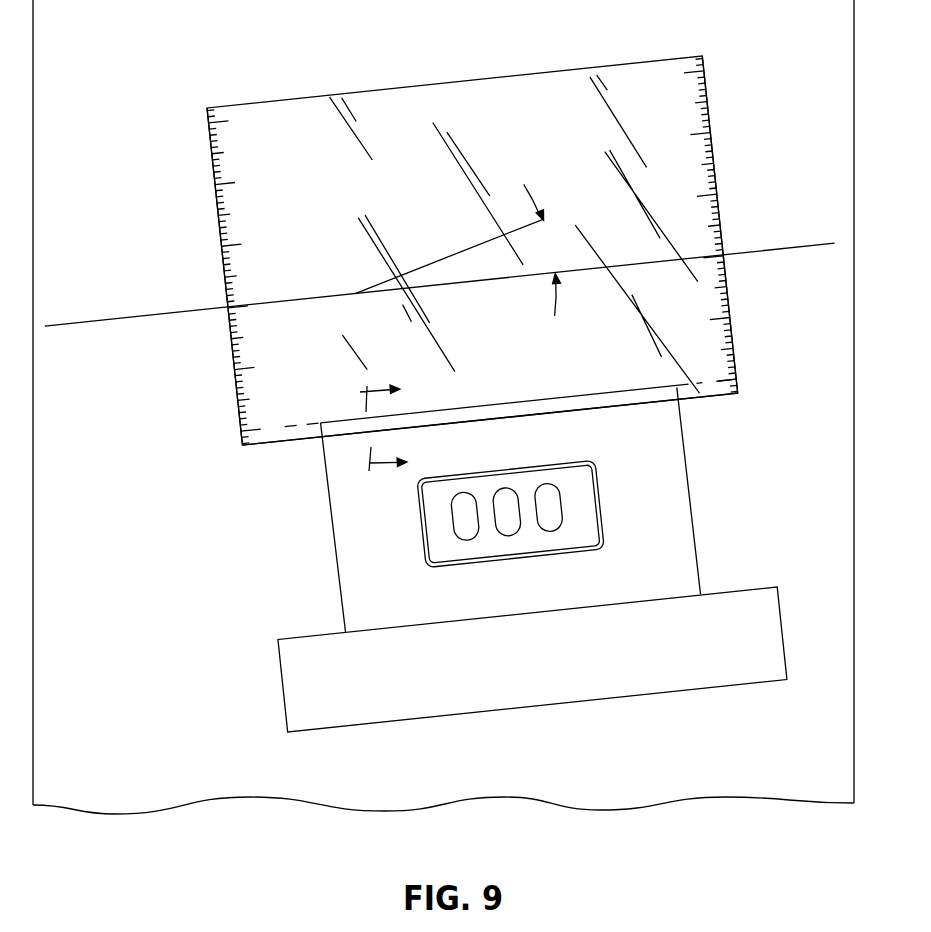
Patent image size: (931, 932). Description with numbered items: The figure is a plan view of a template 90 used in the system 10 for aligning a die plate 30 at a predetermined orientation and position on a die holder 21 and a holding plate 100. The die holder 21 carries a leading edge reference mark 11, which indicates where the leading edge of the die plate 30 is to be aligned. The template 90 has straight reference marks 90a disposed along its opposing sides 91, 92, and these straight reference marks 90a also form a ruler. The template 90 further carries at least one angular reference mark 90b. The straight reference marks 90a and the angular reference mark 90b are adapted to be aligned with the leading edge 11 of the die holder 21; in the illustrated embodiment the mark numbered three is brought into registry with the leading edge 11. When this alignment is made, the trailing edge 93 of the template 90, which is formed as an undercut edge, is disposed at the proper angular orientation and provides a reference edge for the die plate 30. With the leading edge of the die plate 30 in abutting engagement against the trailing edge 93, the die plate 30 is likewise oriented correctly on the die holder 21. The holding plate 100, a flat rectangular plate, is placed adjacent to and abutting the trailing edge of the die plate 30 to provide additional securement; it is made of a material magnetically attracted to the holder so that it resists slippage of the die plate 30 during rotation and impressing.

The die holder 21 is at (122, 42).
The template 90 is at (484, 80).
The opposing side 91 is at (215, 188).
The opposing side 92 is at (713, 145).
The straight reference marks 90a is at (733, 303).
The angular reference mark 90b is at (450, 255).
The trailing edge 93 is at (729, 398).
The leading edge reference mark 11 is at (790, 247).
The system 10 is at (367, 430).
The die plate 30 is at (340, 568).
The holding plate 100 is at (284, 693).